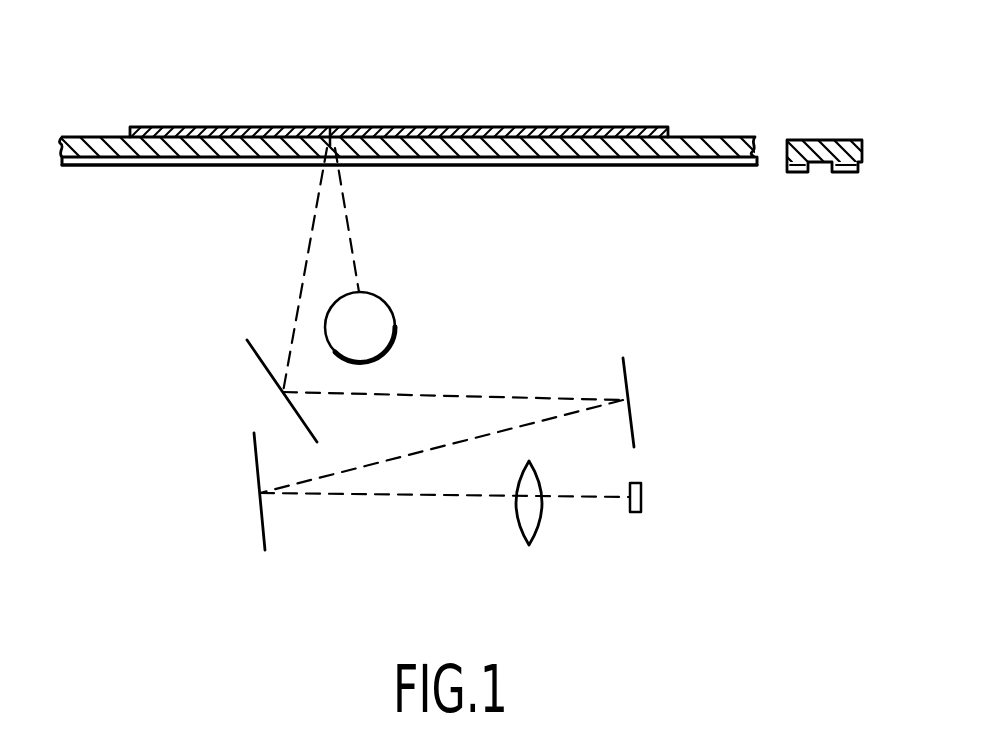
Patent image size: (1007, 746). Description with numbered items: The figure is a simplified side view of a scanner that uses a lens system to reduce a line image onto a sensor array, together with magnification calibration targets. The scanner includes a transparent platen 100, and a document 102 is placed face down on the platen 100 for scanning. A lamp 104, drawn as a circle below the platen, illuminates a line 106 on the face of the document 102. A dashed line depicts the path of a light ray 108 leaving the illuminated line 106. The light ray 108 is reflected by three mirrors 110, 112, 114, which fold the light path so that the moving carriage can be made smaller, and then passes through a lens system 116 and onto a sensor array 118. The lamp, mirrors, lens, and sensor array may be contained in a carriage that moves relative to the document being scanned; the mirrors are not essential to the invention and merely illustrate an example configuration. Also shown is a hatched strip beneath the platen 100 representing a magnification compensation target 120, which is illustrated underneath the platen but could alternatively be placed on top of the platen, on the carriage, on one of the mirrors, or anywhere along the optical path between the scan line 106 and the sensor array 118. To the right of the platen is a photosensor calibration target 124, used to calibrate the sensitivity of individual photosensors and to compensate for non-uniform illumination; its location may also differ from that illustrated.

The transparent platen 100 is at (705, 138).
The document 102 is at (508, 128).
The lamp 104 is at (390, 312).
The line 106 is at (330, 128).
The light ray 108 is at (305, 238).
The mirror 110 is at (260, 363).
The mirror 112 is at (628, 375).
The mirror 114 is at (260, 530).
The lens system 116 is at (530, 545).
The sensor array 118 is at (643, 497).
The magnification compensation target 120 is at (605, 168).
The photosensor calibration target 124 is at (847, 172).